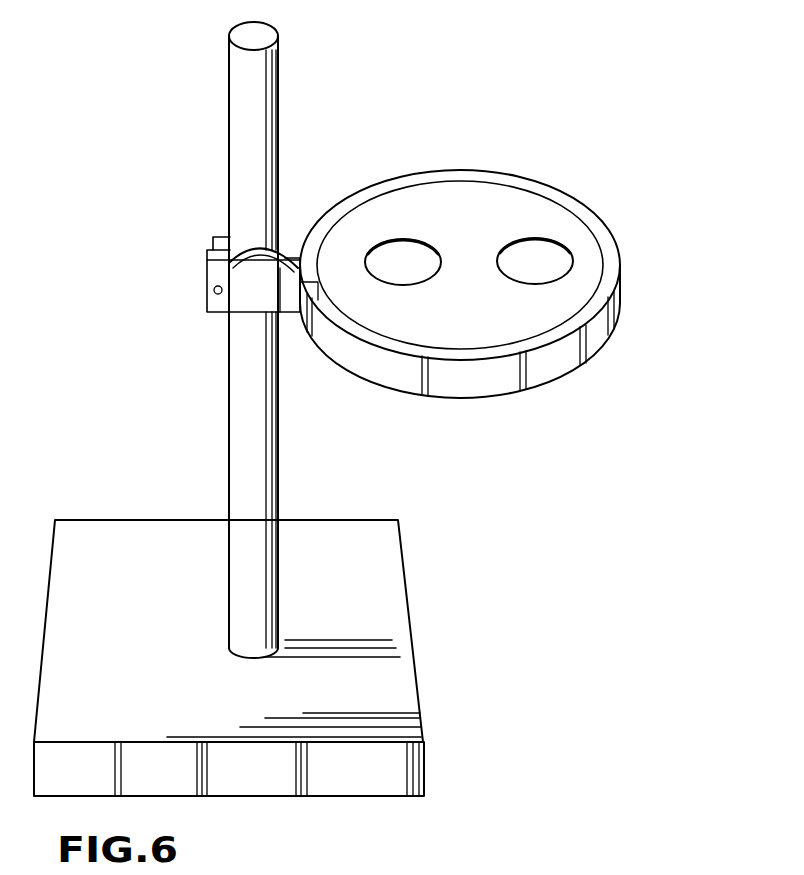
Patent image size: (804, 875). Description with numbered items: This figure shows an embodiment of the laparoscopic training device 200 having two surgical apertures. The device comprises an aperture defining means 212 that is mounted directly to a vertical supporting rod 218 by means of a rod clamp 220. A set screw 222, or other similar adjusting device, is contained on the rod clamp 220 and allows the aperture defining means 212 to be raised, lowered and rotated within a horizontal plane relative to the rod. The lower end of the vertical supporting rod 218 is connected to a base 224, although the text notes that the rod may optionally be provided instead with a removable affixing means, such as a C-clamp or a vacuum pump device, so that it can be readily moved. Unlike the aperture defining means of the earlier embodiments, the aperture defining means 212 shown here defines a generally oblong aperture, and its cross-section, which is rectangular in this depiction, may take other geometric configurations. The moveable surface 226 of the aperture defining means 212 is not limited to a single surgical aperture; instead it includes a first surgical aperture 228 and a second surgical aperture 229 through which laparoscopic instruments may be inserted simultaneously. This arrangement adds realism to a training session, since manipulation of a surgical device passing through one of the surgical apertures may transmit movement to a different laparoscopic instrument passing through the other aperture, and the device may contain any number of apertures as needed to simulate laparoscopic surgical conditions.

The laparoscopic training device 200 is at (569, 182).
The aperture defining means 212 is at (460, 267).
The vertical supporting rod 218 is at (240, 125).
The rod clamp 220 is at (195, 284).
The set screw 222 is at (208, 282).
The base 224 is at (130, 555).
The moveable surface 226 is at (430, 205).
The first surgical aperture 228 is at (398, 265).
The second surgical aperture 229 is at (540, 260).